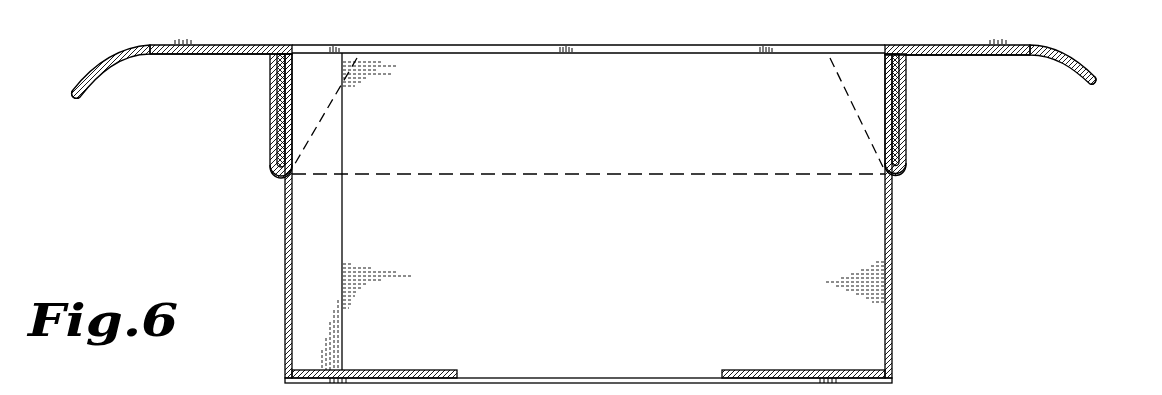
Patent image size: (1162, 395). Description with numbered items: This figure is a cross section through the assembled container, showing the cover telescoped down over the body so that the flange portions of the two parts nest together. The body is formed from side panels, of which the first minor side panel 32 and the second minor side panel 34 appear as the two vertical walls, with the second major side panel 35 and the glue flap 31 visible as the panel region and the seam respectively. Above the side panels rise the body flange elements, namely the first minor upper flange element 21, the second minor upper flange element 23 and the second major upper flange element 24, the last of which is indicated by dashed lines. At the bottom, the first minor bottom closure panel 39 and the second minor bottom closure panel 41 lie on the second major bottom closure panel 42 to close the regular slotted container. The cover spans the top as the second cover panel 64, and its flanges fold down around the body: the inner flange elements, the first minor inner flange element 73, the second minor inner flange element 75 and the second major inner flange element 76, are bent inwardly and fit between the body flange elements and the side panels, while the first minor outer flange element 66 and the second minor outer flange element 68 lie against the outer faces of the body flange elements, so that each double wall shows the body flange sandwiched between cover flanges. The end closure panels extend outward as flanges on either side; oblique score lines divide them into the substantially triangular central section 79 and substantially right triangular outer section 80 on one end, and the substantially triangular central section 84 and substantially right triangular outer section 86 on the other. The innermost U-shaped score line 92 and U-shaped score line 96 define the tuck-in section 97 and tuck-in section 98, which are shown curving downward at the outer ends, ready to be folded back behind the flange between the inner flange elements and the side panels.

The first minor upper flange element 21 is at (278, 125).
The second minor upper flange element 23 is at (900, 98).
The second major upper flange element 24 is at (330, 91).
The glue flap 31 is at (325, 230).
The first minor side panel 32 is at (285, 242).
The second minor side panel 34 is at (893, 228).
The second major side panel 35 is at (600, 259).
The first minor bottom closure panel 39 is at (395, 371).
The second minor bottom closure panel 41 is at (785, 370).
The second major bottom closure panel 42 is at (577, 378).
The second cover panel 64 is at (598, 45).
The first minor outer flange element 66 is at (270, 145).
The second minor outer flange element 68 is at (905, 130).
The first minor inner flange element 73 is at (283, 158).
The second minor inner flange element 75 is at (900, 152).
The second major inner flange element 76 is at (598, 130).
The substantially triangular central section 79 is at (212, 58).
The substantially right triangular outer section 80 is at (200, 46).
The substantially triangular central section 84 is at (995, 58).
The substantially right triangular outer section 86 is at (955, 34).
The U-shaped score line 92 is at (150, 85).
The U-shaped score line 96 is at (1028, 48).
The tuck-in section 97 is at (86, 60).
The tuck-in section 98 is at (1096, 63).